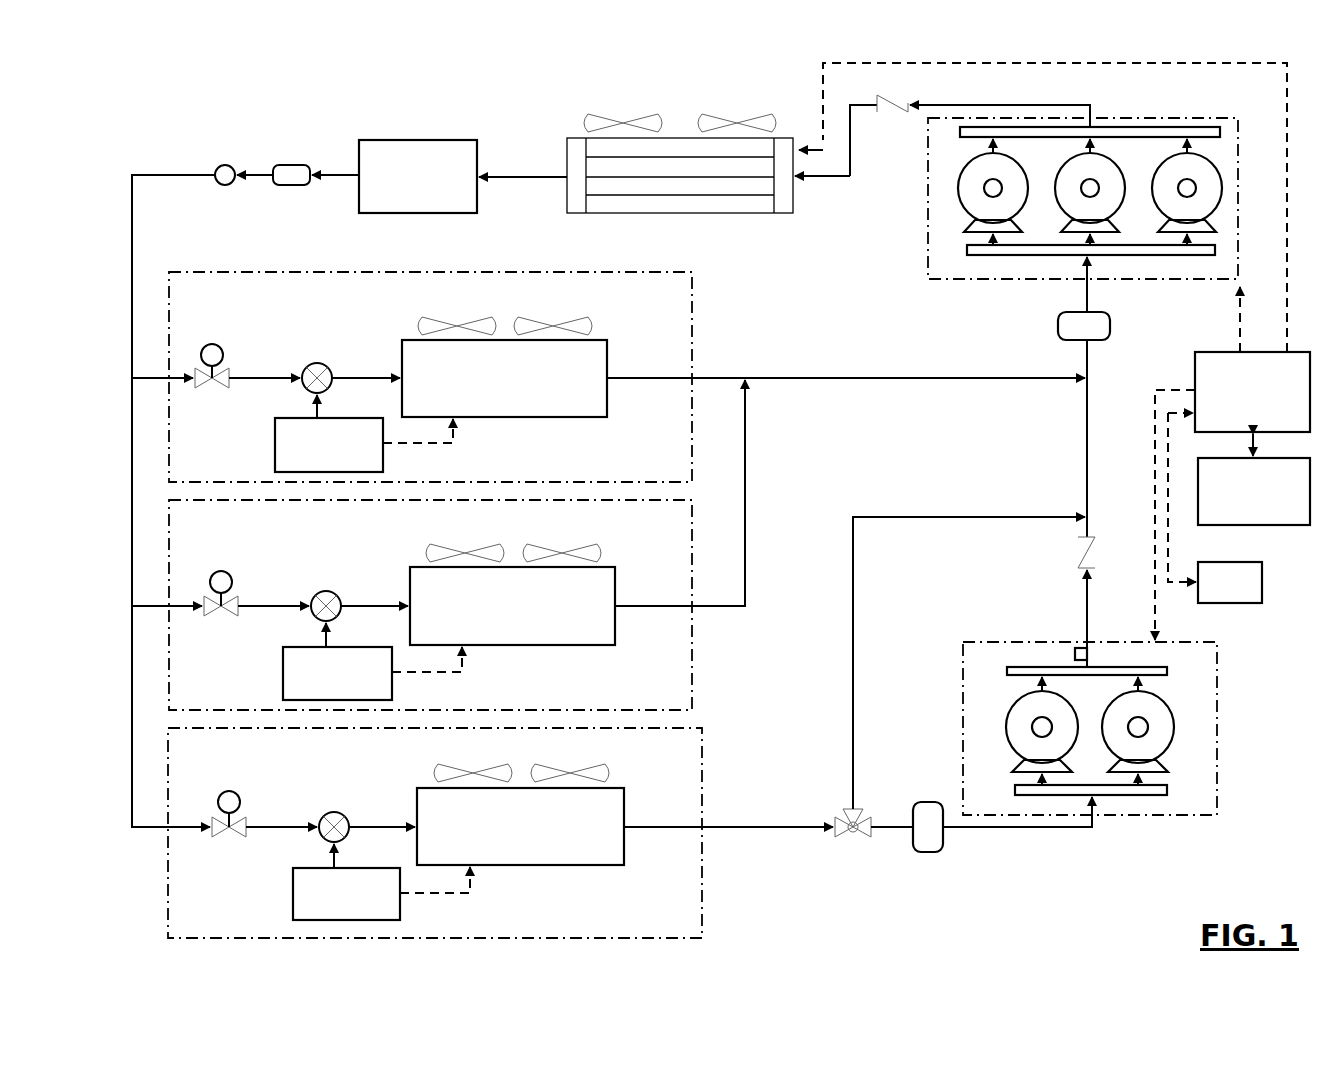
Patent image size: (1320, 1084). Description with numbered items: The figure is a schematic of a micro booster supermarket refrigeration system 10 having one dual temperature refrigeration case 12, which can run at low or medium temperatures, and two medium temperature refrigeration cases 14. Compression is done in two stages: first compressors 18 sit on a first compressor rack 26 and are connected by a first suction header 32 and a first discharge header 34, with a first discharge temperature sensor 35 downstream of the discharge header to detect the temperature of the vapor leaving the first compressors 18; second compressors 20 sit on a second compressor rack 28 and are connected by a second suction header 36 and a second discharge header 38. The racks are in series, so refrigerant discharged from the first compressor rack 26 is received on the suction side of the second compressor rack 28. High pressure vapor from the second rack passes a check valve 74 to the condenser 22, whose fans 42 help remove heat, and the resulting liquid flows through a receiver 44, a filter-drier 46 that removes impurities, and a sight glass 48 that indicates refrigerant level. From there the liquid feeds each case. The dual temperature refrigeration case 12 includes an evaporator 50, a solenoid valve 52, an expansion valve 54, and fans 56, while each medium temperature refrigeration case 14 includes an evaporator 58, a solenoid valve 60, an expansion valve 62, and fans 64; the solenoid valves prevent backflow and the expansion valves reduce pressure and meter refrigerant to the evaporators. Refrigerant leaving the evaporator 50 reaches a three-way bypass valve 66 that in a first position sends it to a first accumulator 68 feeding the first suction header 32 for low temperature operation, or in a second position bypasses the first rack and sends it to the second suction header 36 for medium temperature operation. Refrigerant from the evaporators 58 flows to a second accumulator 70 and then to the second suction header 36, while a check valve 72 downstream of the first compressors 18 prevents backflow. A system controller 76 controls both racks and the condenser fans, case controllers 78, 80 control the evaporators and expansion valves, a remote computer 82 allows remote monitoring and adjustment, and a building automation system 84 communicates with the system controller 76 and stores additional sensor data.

The micro booster supermarket refrigeration system 10 is at (160, 78).
The dual temperature refrigeration case 12 is at (702, 938).
The medium temperature refrigeration case 14 is at (692, 272).
The first compressor 18 is at (1066, 700).
The second compressor 20 is at (1060, 168).
The condenser 22 is at (793, 213).
The first compressor rack 26 is at (1228, 642).
The second compressor rack 28 is at (925, 279).
The first suction header 32 is at (1015, 790).
The first discharge header 34 is at (1007, 673).
The first discharge temperature sensor 35 is at (1075, 650).
The second suction header 36 is at (967, 250).
The second discharge header 38 is at (962, 132).
The fan 42 is at (592, 120).
The receiver 44 is at (477, 140).
The filter-drier 46 is at (290, 165).
The sight glass 48 is at (225, 165).
The evaporator 50 is at (624, 788).
The solenoid valve 52 is at (236, 793).
The expansion valve 54 is at (343, 814).
The fan 56 is at (452, 767).
The evaporator 58 is at (607, 340).
The solenoid valve 60 is at (220, 345).
The expansion valve 62 is at (326, 364).
The fan 64 is at (436, 320).
The bypass valve 66 is at (842, 842).
The first accumulator 68 is at (913, 802).
The second accumulator 70 is at (1058, 316).
The check valve 72 is at (1095, 537).
The check valve 74 is at (908, 95).
The system controller 76 is at (1195, 352).
The case controller 78 is at (293, 868).
The case controller 80 is at (275, 418).
The remote computer 82 is at (1198, 525).
The building automation system 84 is at (1262, 603).